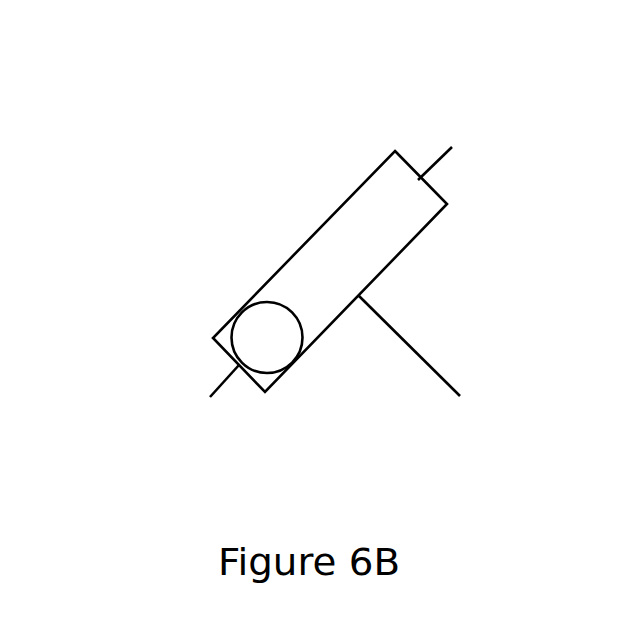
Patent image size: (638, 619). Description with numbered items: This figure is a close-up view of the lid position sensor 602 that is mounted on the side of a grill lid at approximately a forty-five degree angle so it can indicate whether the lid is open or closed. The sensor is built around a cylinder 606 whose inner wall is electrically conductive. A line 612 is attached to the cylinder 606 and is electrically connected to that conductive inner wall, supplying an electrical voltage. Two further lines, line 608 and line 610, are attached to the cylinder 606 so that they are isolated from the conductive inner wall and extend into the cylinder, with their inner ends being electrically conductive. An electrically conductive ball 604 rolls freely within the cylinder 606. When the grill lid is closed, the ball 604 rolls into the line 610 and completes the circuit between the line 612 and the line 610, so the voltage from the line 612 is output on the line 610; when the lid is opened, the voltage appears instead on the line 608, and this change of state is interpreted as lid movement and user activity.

The lid position sensor 602 is at (160, 142).
The electrically conductive ball 604 is at (258, 332).
The cylinder 606 is at (335, 237).
The line 608 is at (437, 157).
The line 610 is at (233, 372).
The line 612 is at (408, 342).